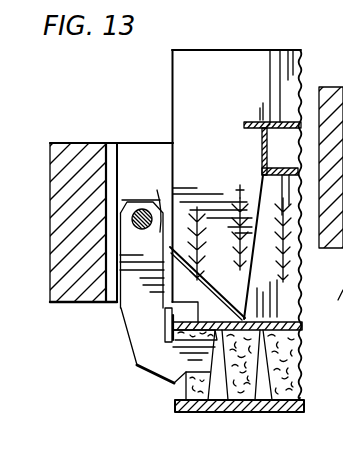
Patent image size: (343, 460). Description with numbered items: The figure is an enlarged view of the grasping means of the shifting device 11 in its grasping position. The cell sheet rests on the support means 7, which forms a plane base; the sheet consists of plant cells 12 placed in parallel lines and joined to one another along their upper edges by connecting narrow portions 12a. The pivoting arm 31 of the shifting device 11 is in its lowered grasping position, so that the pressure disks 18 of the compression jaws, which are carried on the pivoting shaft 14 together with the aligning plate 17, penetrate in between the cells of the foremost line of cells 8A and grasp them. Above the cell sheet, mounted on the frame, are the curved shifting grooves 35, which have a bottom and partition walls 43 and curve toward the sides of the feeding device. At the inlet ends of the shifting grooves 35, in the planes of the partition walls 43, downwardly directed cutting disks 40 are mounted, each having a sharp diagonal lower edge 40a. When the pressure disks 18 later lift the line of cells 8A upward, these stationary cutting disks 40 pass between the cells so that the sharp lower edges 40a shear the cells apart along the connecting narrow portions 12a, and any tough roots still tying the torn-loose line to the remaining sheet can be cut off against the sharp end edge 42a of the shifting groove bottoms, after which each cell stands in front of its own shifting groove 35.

The support means 7 is at (212, 411).
The foremost line of cells 8A is at (172, 391).
The shifting device 11 is at (95, 134).
The plant cells 12 is at (250, 378).
The connecting narrow portions 12a is at (300, 326).
The pivoting shaft 14 is at (136, 176).
The aligning plate 17 is at (170, 328).
The pressure disks 18 is at (140, 208).
The pivoting arm 31 is at (75, 288).
The shifting grooves 35 is at (269, 66).
The cutting disks 40 is at (199, 167).
The diagonal lower edge 40a is at (180, 282).
The sharp end edge 42a is at (245, 121).
The partition walls 43 is at (240, 65).